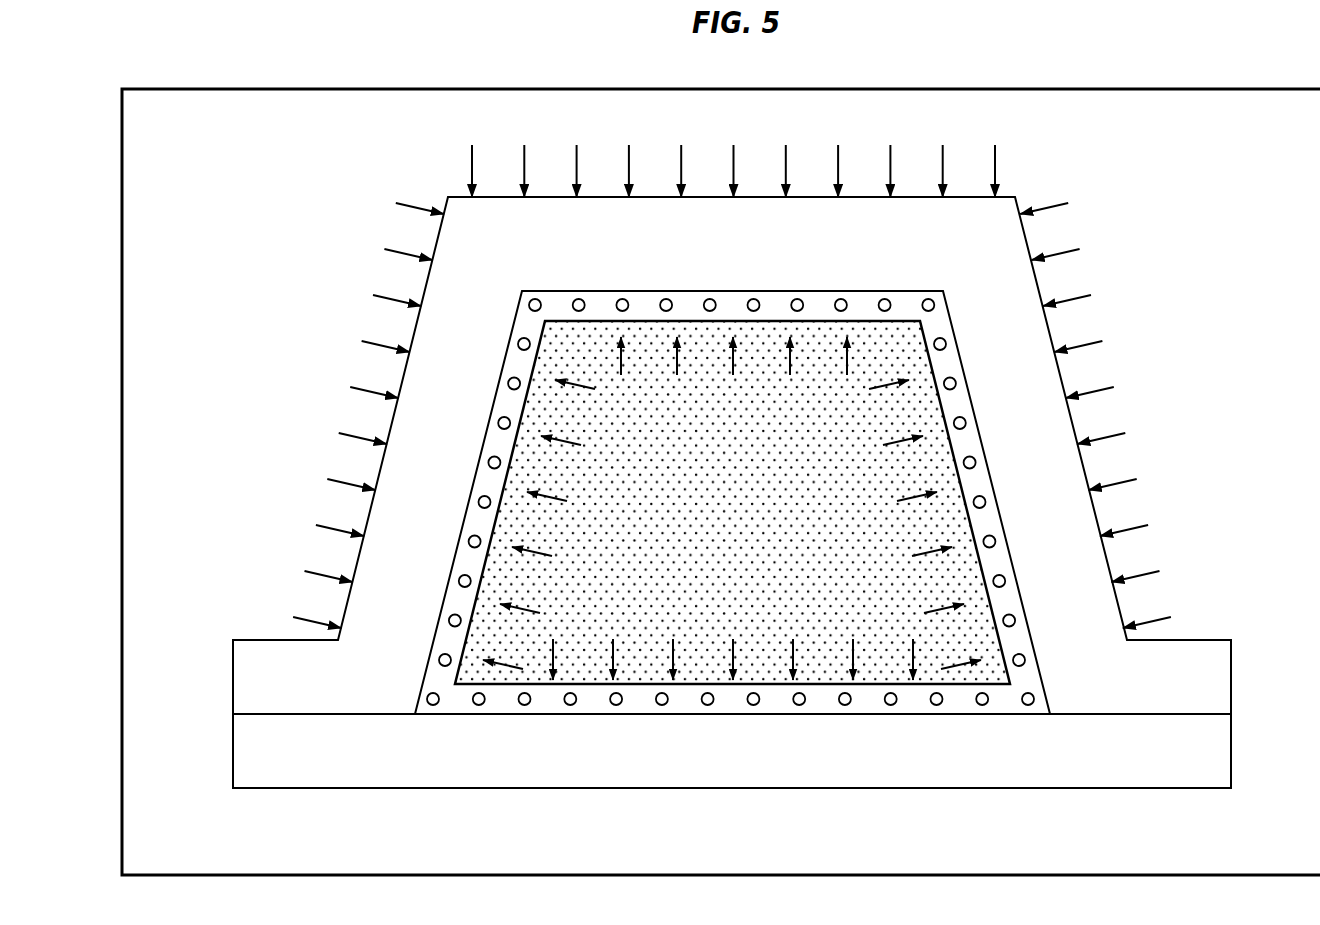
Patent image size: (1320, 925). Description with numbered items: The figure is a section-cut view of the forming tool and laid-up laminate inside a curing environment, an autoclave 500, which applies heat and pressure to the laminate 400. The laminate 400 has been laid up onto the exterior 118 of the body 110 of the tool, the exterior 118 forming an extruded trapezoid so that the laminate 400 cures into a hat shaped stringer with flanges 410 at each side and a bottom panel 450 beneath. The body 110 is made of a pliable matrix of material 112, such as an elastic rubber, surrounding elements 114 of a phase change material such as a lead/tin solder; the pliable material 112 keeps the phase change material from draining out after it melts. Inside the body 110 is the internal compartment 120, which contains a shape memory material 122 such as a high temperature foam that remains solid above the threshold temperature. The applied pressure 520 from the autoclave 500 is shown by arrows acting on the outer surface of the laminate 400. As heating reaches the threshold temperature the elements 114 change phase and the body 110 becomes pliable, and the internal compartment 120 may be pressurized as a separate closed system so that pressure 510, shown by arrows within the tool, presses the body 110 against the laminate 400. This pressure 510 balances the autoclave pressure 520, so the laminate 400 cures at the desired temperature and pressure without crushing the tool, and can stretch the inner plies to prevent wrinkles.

The body 110 is at (677, 715).
The pliable matrix of material 112 is at (563, 305).
The elements of phase change material 114 is at (709, 300).
The exterior 118 is at (885, 290).
The internal compartment 120 is at (552, 523).
The shape memory material 122 is at (917, 582).
The laminate 400 is at (448, 195).
The flanges 410 is at (255, 640).
The bottom panel 450 is at (1218, 740).
The autoclave 500 is at (812, 866).
The pressure 510 is at (545, 437).
The applied pressure 520 is at (997, 158).